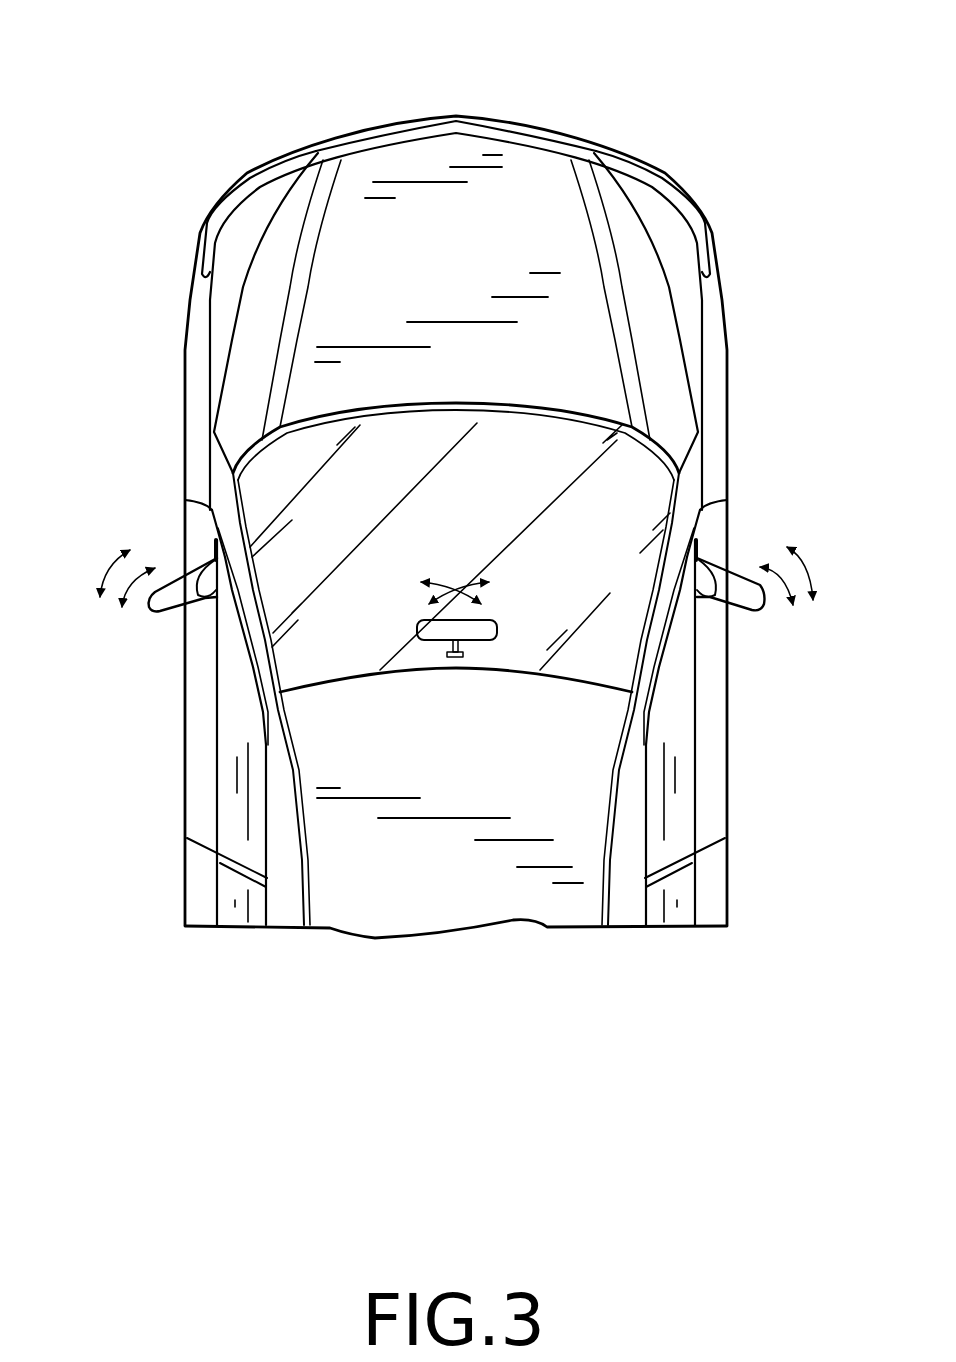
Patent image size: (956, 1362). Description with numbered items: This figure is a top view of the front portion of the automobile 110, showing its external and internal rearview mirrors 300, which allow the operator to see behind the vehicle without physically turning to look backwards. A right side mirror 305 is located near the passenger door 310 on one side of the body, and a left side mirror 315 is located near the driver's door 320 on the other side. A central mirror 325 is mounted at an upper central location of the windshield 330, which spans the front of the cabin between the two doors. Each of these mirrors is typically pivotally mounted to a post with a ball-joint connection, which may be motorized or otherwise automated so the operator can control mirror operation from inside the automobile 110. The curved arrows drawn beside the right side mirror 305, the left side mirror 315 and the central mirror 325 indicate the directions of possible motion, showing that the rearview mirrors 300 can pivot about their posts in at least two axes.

The automobile 110 is at (152, 163).
The rearview mirrors 300 is at (503, 627).
The right side mirror 305 is at (743, 613).
The passenger door 310 is at (710, 785).
The left side mirror 315 is at (167, 617).
The driver's door 320 is at (203, 760).
The central mirror 325 is at (418, 636).
The windshield 330 is at (548, 490).